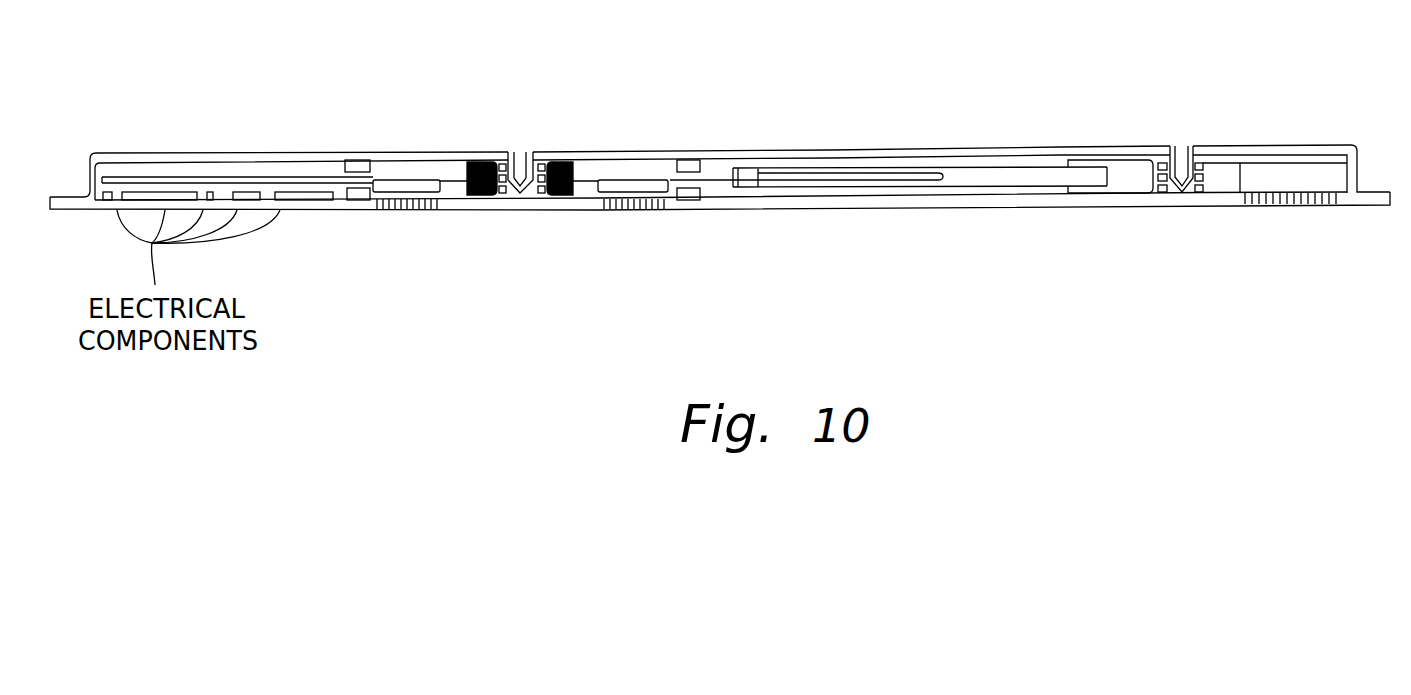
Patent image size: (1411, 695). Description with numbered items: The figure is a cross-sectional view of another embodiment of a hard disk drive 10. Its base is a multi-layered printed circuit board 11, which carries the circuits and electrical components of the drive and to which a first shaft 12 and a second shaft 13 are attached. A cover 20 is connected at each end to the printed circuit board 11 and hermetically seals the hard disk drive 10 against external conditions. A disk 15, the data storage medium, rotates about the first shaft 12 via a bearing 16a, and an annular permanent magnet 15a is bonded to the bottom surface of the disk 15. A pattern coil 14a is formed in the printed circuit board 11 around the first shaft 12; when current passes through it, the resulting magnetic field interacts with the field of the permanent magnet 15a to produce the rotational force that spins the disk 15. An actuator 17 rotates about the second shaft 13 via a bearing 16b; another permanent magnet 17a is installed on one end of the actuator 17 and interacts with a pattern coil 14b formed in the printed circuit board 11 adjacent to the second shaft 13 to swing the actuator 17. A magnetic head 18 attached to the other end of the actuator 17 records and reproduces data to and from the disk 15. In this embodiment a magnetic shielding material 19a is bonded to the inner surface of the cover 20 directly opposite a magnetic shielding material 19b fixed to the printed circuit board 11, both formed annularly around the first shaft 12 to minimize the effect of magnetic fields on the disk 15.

The hard disk drive 10 is at (130, 112).
The printed circuit board 11 is at (68, 224).
The first shaft 12 is at (520, 205).
The second shaft 13 is at (1181, 205).
The pattern coil 14a is at (403, 210).
The pattern coil 14b is at (1295, 205).
The disk 15 is at (279, 177).
The permanent magnet 15a is at (410, 180).
The bearing 16a is at (543, 162).
The bearing 16b is at (1196, 150).
The actuator 17 is at (1122, 166).
The permanent magnet 17a is at (1290, 163).
The magnetic head 18 is at (743, 168).
The magnetic shielding material 19a is at (350, 160).
The magnetic shielding material 19b is at (350, 200).
The cover 20 is at (191, 153).